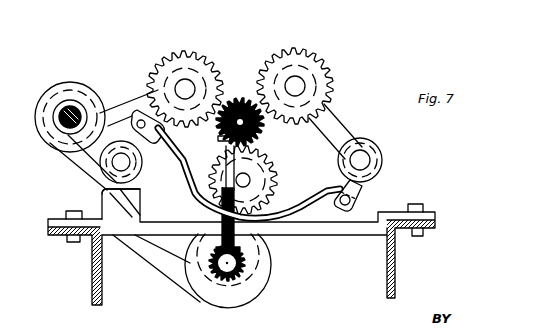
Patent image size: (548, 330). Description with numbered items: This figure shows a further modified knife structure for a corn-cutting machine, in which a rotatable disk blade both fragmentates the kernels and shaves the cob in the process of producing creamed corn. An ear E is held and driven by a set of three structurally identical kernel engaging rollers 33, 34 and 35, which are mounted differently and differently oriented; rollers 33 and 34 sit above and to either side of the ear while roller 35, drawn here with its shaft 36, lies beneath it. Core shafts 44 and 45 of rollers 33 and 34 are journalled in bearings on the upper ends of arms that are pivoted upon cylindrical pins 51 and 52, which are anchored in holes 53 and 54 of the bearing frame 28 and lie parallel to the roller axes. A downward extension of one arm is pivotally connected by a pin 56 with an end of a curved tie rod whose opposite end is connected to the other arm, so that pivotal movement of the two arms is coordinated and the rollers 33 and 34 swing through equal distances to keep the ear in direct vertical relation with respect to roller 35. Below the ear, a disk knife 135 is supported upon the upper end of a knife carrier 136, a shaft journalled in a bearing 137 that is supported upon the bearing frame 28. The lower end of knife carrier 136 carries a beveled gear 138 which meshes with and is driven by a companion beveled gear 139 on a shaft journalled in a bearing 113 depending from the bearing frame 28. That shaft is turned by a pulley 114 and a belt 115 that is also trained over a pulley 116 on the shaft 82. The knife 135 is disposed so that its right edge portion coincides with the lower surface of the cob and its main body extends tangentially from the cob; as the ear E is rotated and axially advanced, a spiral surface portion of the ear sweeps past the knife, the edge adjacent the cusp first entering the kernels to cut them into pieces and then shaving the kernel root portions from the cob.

The bearing frame 28 is at (371, 234).
The shaft 82 is at (68, 110).
The pulley 116 is at (102, 112).
The kernel engaging roller 34 is at (197, 53).
The core shaft 45 is at (183, 85).
The kernel engaging roller 33 is at (325, 63).
The core shaft 44 is at (297, 80).
The ear E is at (238, 94).
The kernel engaging roller 35 is at (268, 172).
The gear shaft 36 is at (250, 180).
The knife carrier 136 is at (222, 167).
The disk knife 135 is at (223, 141).
The beveled gear 138 is at (242, 252).
The beveled gear 139 is at (218, 277).
The pulley 114 is at (267, 283).
The bearing 113 is at (268, 268).
The pin 51 is at (365, 157).
The hole 53 is at (372, 162).
The pin 56 is at (352, 197).
The bearing 137 is at (207, 209).
The belt 115 is at (80, 178).
The pin 52 is at (118, 162).
The hole 54 is at (107, 187).